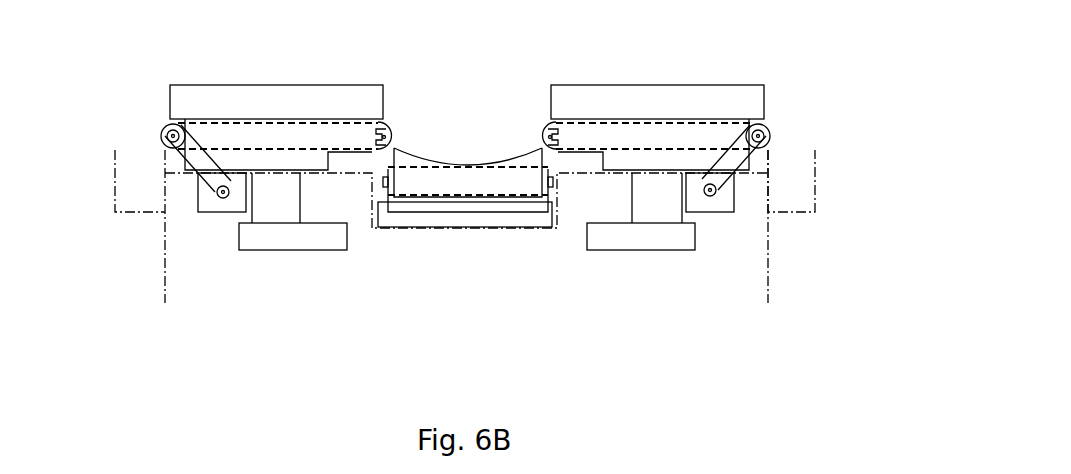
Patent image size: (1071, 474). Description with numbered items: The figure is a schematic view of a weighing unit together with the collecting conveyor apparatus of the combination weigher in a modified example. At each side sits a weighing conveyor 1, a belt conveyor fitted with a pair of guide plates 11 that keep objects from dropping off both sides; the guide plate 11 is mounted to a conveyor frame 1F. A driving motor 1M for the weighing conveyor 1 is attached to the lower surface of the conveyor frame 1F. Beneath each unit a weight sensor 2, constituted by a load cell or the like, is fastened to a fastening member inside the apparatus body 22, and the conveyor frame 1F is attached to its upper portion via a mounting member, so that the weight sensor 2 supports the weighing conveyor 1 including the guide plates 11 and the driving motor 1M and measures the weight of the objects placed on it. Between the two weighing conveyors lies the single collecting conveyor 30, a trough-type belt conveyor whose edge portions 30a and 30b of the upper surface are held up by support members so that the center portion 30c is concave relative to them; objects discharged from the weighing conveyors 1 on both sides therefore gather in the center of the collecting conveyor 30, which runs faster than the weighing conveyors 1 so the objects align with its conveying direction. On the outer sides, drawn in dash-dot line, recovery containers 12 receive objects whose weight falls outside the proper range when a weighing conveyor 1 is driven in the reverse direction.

The weighing conveyor 1 is at (165, 128).
The guide plate 11 is at (276, 85).
The recovery container 12 is at (115, 180).
The apparatus body 22 is at (770, 262).
The driving motor 1M is at (222, 212).
The conveyor frame 1F is at (318, 158).
The weight sensor 2 is at (292, 250).
The collecting conveyor 30 is at (465, 134).
The edge portion 30a is at (482, 162).
The edge portion 30b is at (530, 152).
The center portion 30c is at (422, 157).